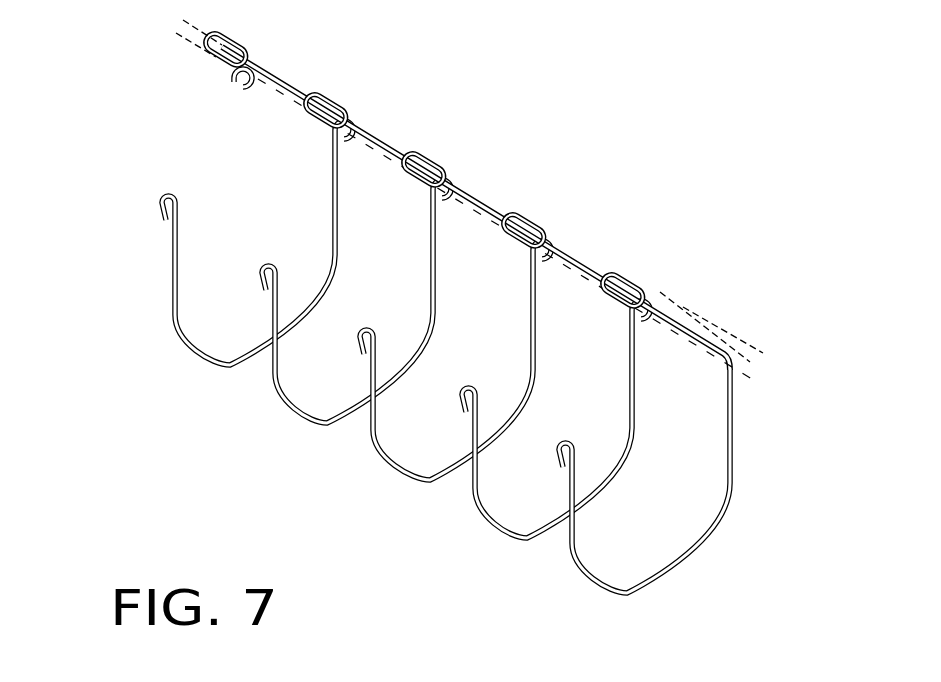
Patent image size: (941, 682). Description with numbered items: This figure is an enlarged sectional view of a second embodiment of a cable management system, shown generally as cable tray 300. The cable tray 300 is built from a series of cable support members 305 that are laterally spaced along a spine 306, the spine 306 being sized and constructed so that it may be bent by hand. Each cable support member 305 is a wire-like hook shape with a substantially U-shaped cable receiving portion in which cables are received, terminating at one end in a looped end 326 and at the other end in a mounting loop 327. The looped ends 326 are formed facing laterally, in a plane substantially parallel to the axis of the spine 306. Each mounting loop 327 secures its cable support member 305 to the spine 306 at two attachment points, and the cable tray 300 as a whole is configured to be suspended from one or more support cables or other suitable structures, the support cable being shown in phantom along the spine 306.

The cable tray 300 is at (500, 311).
The cable support member 305 is at (207, 372).
The spine 306 is at (740, 342).
The looped end 326 is at (557, 453).
The mounting loop 327 is at (668, 295).